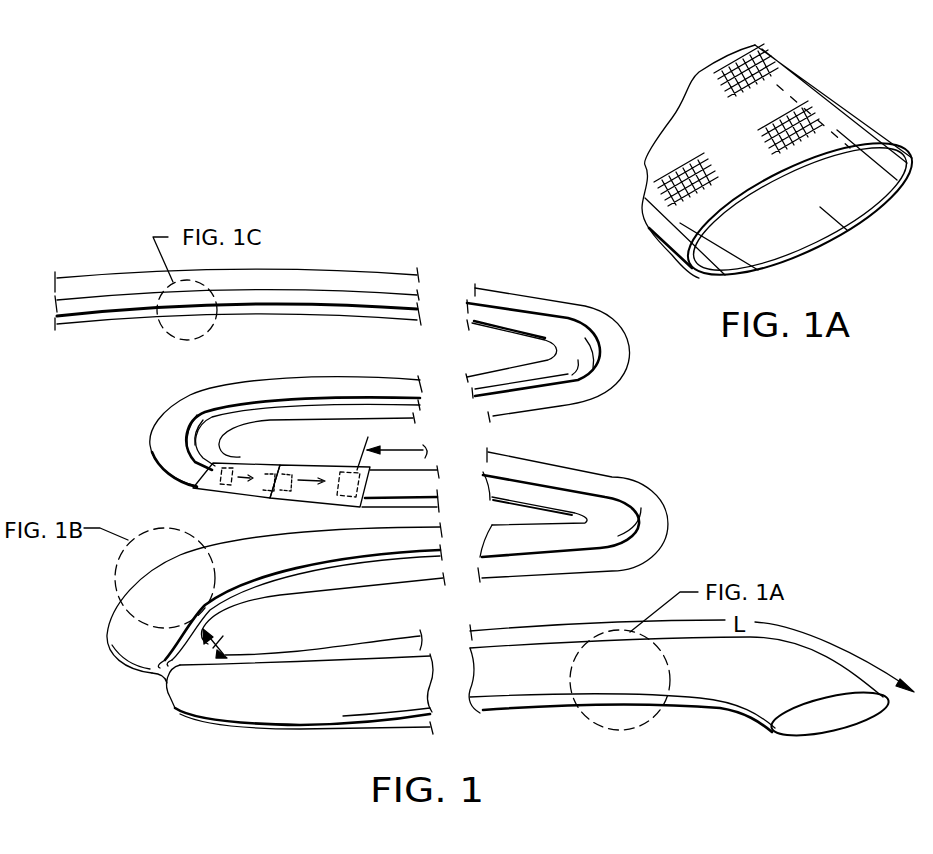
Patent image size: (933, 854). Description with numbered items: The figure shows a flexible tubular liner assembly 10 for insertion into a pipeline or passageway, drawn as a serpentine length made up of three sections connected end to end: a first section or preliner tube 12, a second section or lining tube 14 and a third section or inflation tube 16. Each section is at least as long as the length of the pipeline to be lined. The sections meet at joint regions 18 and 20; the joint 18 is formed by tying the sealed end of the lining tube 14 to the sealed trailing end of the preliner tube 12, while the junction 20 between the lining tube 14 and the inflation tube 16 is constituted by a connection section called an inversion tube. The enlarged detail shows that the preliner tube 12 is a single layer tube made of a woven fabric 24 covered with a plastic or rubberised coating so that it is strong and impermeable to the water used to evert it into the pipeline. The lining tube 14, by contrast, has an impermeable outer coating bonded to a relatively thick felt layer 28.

In FIG. 1, the flexible tubular liner assembly 10 is at (145, 465).
In FIG. 1, the preliner tube 12 is at (310, 707).
In FIG. 1A, the preliner tube 12 is at (650, 213).
In FIG. 1, the lining tube 14 is at (622, 512).
In FIG. 1, the inflation tube 16 is at (530, 323).
In FIG. 1, the joint region 18 is at (143, 686).
In FIG. 1, the joint region 20 is at (232, 503).
In FIG. 1A, the woven fabric 24 is at (722, 112).
In FIG. 1, the felt layer 28 is at (0, 693).